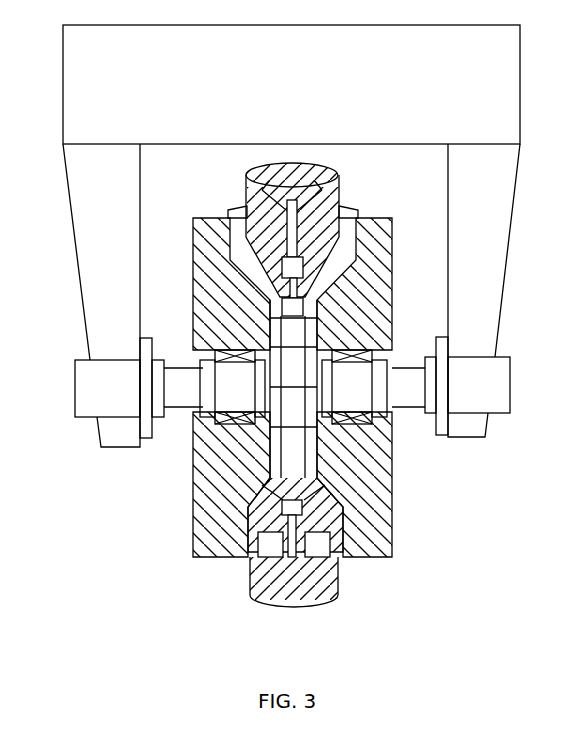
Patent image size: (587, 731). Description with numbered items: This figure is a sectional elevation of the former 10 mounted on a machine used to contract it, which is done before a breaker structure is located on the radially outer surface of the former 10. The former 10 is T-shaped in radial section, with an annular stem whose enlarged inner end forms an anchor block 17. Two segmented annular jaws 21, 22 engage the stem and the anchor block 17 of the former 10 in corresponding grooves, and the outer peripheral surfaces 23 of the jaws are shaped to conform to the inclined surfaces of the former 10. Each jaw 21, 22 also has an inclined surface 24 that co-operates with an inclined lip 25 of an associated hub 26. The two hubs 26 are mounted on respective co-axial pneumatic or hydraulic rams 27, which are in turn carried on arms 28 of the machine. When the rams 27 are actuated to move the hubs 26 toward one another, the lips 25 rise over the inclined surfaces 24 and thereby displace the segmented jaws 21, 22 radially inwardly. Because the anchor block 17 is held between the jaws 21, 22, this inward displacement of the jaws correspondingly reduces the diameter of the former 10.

The former 10 is at (305, 162).
The anchor block 17 is at (337, 540).
The segmented annular jaw 21 is at (275, 560).
The segmented annular jaw 22 is at (340, 578).
The outer peripheral surface 23 is at (296, 604).
The inclined surface 24 is at (245, 196).
The inclined lip 25 is at (229, 211).
The hub 26 is at (202, 489).
The ram 27 is at (187, 388).
The arm 28 is at (90, 284).